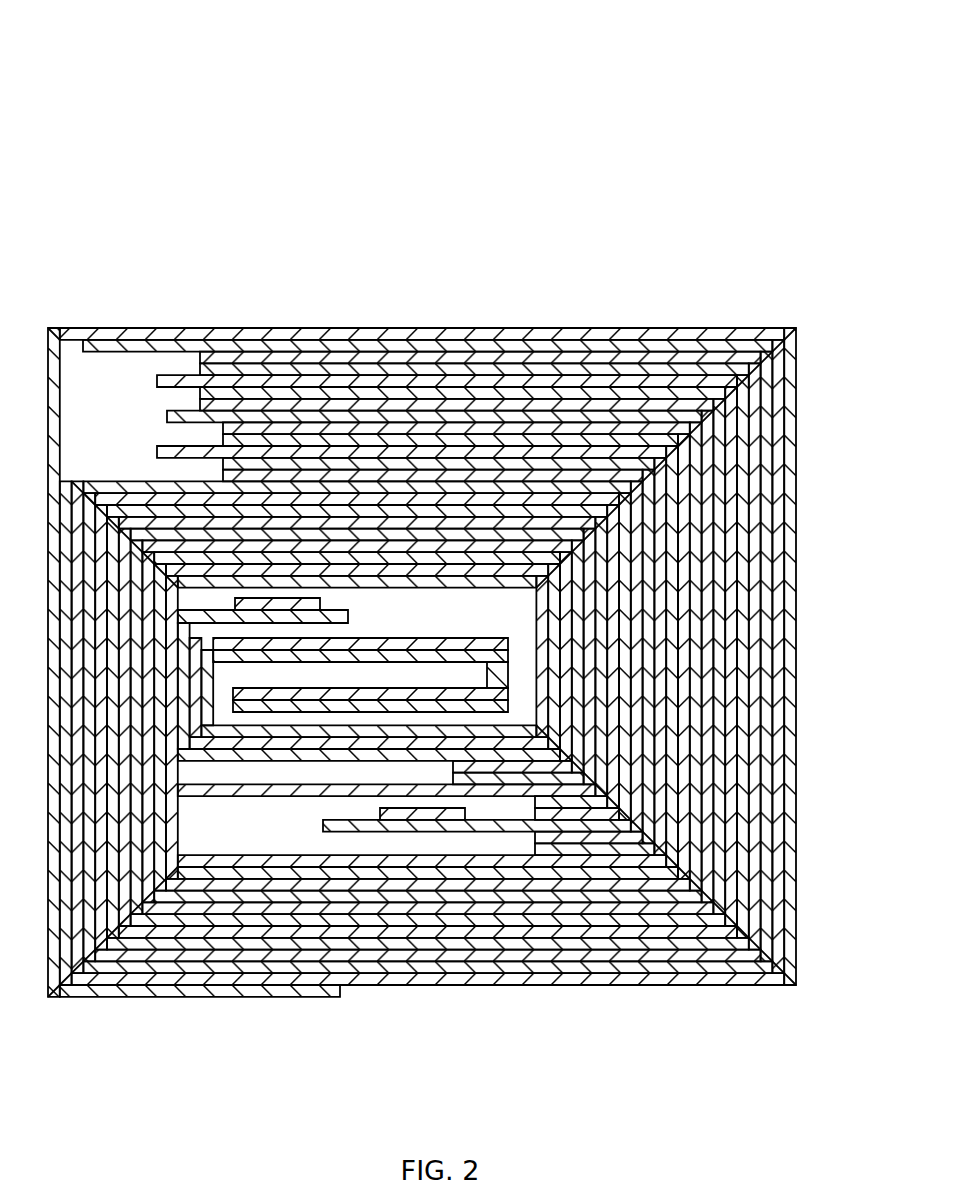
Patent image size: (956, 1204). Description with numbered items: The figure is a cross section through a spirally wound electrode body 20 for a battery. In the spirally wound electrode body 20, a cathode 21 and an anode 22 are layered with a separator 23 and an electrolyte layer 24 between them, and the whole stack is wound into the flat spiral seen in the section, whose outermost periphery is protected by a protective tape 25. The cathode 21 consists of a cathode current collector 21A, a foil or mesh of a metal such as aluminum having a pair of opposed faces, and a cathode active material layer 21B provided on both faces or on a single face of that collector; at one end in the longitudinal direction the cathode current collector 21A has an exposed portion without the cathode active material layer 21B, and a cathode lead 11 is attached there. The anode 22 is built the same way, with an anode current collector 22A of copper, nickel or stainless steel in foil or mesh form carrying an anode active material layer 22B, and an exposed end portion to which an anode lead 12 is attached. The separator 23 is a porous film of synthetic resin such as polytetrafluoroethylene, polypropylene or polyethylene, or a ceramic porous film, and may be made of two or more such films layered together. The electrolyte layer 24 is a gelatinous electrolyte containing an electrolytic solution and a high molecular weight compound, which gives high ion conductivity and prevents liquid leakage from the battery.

The spirally wound electrode body 20 is at (616, 112).
The cathode 21 is at (272, 211).
The cathode current collector 21A is at (190, 413).
The cathode active material layer 21B is at (262, 427).
The anode 22 is at (340, 211).
The anode current collector 22A is at (367, 343).
The anode active material layer 22B is at (492, 478).
The separator 23 is at (538, 447).
The electrolyte layer 24 is at (637, 452).
The protective tape 25 is at (750, 330).
The cathode lead 11 is at (257, 606).
The anode lead 12 is at (415, 814).